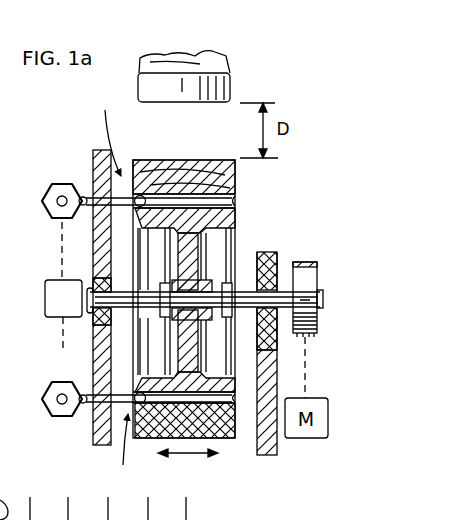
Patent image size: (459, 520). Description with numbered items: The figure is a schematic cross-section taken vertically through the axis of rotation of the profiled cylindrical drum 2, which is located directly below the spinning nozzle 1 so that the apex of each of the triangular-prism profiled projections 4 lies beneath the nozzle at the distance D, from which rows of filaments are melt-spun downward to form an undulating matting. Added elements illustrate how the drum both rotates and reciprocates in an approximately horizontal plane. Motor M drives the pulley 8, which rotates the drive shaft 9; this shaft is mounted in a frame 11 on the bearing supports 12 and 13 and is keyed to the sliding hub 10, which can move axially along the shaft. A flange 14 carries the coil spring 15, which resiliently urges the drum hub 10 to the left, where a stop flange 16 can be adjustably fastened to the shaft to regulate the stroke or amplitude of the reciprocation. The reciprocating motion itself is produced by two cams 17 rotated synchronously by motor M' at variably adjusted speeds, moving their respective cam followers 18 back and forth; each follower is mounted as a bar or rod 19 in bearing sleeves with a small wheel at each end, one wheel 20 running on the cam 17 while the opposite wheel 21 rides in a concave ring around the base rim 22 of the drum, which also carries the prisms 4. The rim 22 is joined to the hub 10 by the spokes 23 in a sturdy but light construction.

The spinning nozzle 1 is at (232, 82).
The profiled cylindrical drum 2 is at (250, 221).
The profiled projections 4 is at (181, 165).
The pulley 8 is at (308, 278).
The drive shaft 9 is at (285, 293).
The sliding hub 10 is at (216, 301).
The frame 11 is at (280, 384).
The bearing support 12 is at (92, 326).
The bearing support 13 is at (270, 256).
The flange 14 is at (238, 337).
The coil spring 15 is at (202, 322).
The stop flange 16 is at (160, 283).
The cam 17 is at (44, 190).
The cam follower 18 is at (112, 289).
The bar or rod 19 is at (95, 244).
The wheel 20 is at (78, 185).
The wheel 21 is at (147, 163).
The base rim 22 is at (236, 196).
The spokes 23 is at (198, 240).